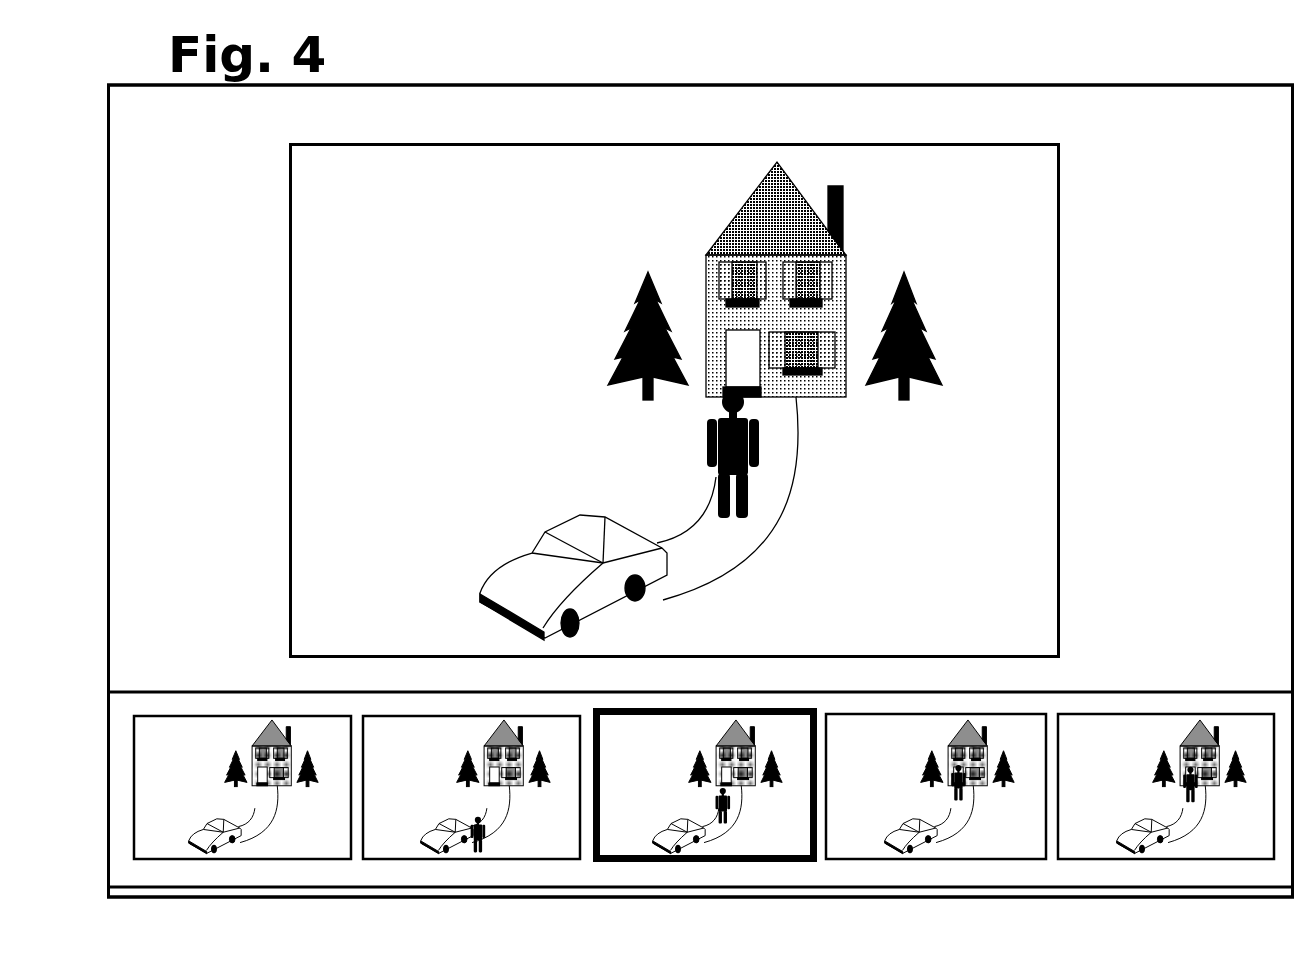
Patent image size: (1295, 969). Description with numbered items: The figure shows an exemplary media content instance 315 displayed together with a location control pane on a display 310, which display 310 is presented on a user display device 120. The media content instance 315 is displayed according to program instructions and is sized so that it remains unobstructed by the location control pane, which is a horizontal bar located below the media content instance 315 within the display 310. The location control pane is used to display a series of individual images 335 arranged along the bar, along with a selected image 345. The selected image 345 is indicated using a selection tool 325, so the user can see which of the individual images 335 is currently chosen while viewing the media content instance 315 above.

The user display device 120 is at (1002, 80).
The display 310 is at (110, 268).
The media content instance 315 is at (355, 225).
The selection tool 325 is at (713, 708).
The individual images 335 is at (242, 712).
The selected image 345 is at (770, 723).